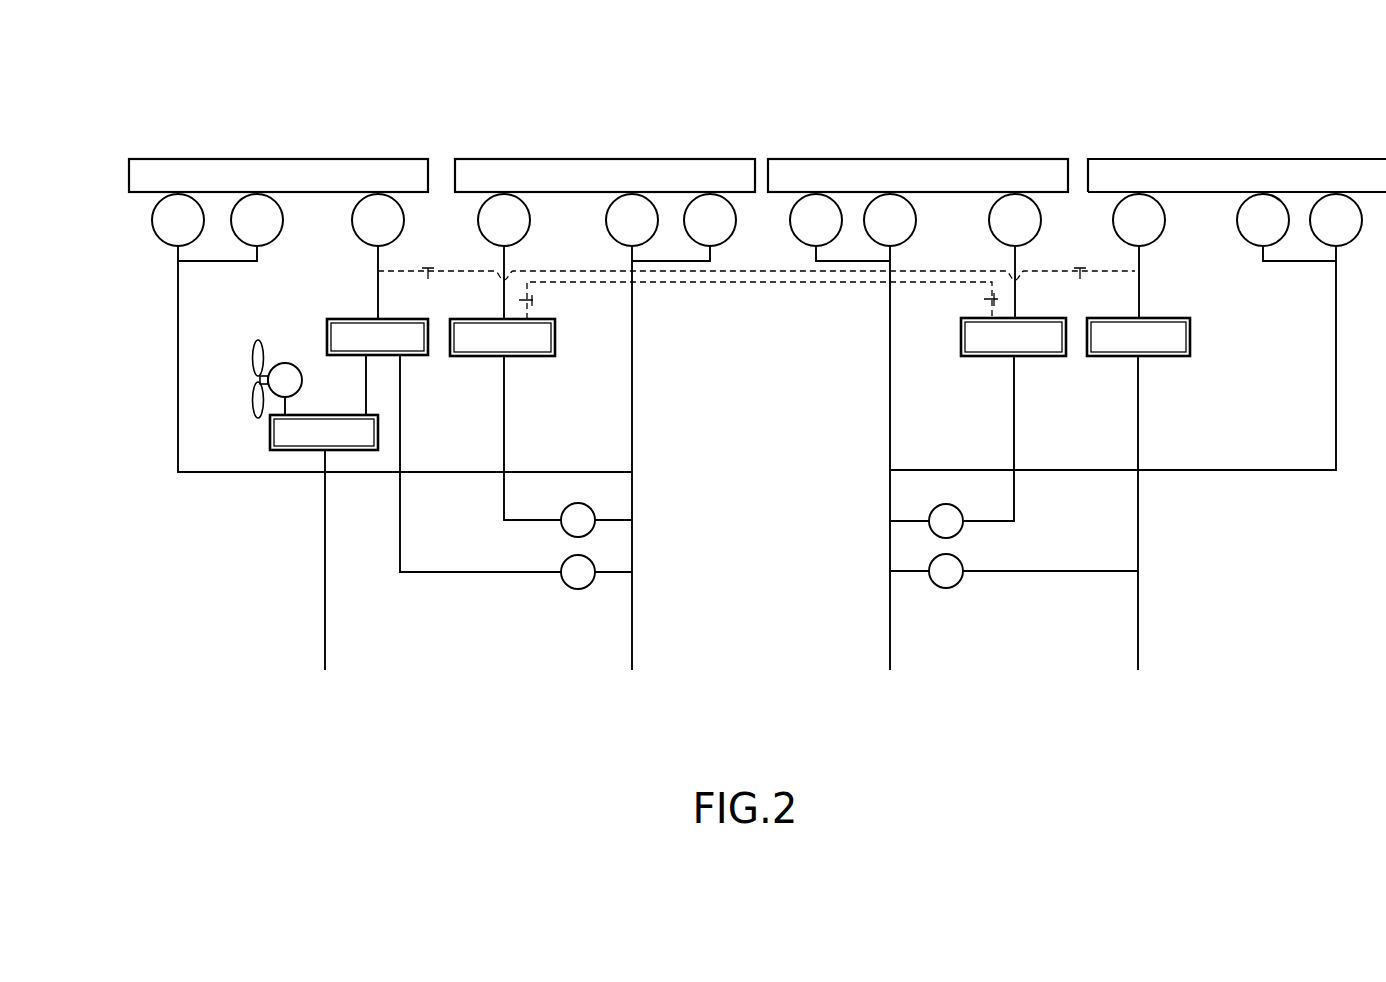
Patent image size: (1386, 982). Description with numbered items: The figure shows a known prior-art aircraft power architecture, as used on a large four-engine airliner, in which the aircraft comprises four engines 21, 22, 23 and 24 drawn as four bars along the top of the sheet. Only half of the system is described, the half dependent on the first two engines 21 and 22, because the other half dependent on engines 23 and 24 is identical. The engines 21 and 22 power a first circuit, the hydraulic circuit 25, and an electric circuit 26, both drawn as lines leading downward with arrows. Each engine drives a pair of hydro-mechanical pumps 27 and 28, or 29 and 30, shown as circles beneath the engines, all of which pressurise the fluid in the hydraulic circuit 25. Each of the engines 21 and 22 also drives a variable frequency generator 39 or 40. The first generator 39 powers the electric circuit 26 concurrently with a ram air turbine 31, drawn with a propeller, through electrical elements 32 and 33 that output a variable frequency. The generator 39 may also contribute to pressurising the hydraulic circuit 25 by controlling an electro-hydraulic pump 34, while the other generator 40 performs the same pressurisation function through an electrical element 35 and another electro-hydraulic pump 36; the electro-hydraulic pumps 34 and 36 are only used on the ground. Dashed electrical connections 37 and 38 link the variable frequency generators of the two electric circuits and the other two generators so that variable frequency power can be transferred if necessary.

The engine 21 is at (298, 167).
The engine 22 is at (588, 167).
The engine 23 is at (905, 167).
The engine 24 is at (1223, 167).
The hydraulic circuit 25 is at (616, 642).
The electric circuit 26 is at (306, 642).
The hydro-mechanical pump 27 is at (603, 218).
The hydro-mechanical pump 28 is at (735, 233).
The hydro-mechanical pump 29 is at (162, 227).
The hydro-mechanical pump 30 is at (279, 226).
The ram air turbine 31 is at (285, 368).
The electrical element 32 is at (390, 319).
The electrical element 33 is at (270, 438).
The electro-hydraulic pump 34 is at (563, 585).
The electrical element 35 is at (555, 357).
The electro-hydraulic pump 36 is at (578, 502).
The electrical connection 37 is at (750, 273).
The electrical connection 38 is at (810, 283).
The variable frequency generator 39 is at (362, 234).
The variable frequency generator 40 is at (480, 218).